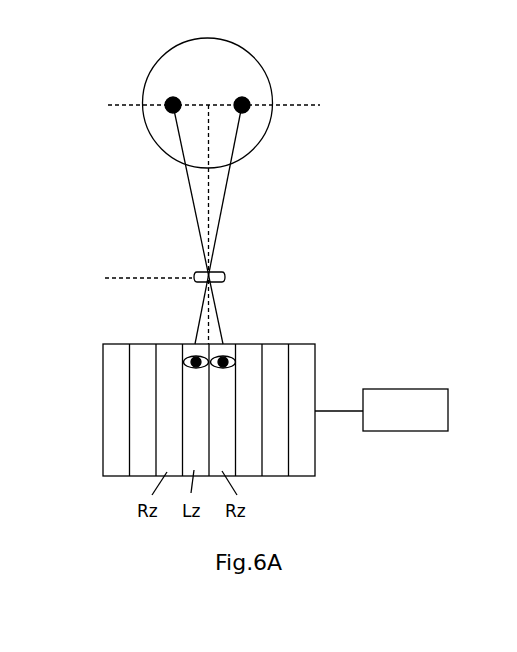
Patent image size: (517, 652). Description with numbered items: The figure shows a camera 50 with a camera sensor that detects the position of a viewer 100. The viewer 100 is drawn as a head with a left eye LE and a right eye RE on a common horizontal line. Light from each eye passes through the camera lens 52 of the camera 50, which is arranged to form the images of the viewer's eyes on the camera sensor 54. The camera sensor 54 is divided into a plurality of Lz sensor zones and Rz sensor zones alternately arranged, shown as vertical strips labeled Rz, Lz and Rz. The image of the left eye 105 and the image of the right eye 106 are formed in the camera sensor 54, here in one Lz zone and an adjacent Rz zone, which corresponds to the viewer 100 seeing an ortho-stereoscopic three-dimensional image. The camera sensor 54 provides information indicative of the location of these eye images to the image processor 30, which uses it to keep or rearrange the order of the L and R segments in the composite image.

The viewer 100 is at (272, 63).
The camera lens 52 is at (227, 277).
The camera 50 is at (98, 278).
The camera sensor 54 is at (102, 400).
The image of the left eye 105 is at (192, 357).
The image of the right eye 106 is at (227, 357).
The image processor 30 is at (406, 397).